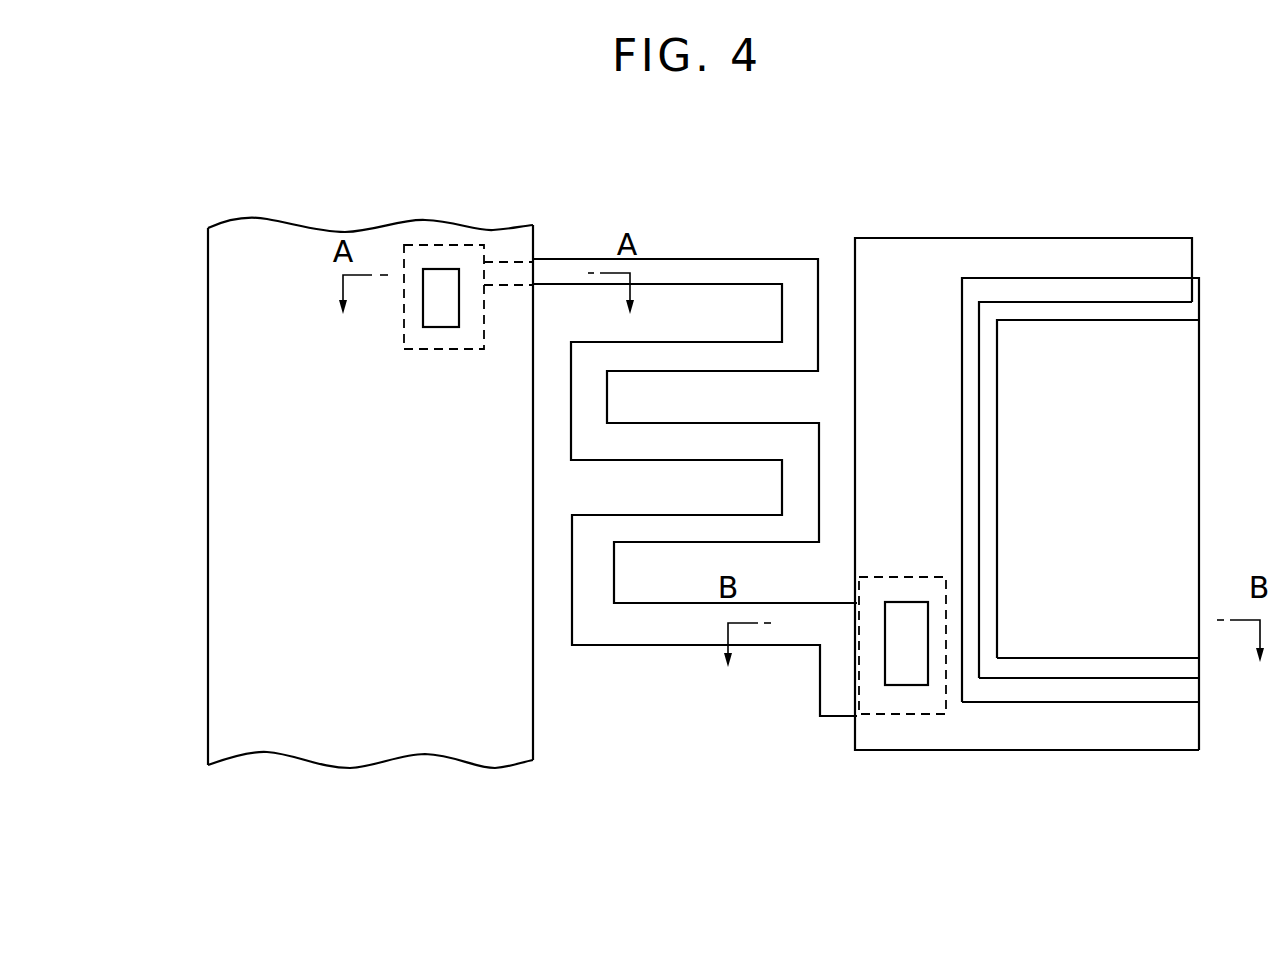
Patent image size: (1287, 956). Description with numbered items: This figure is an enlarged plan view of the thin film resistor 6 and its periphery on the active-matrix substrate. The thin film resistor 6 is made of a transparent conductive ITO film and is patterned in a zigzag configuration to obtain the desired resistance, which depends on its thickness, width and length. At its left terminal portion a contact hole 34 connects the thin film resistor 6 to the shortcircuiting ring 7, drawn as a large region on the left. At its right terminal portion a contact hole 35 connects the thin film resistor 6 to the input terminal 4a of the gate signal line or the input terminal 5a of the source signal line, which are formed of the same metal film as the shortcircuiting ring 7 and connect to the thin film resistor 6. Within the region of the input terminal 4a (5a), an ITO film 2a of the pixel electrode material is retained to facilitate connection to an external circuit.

The shortcircuiting ring 7 is at (290, 247).
The contact hole 34 is at (436, 275).
The thin film resistor 6 is at (710, 270).
The input terminal of the gate signal line 4a is at (1027, 456).
The input terminal of the source signal line 5a is at (945, 265).
The ITO film 2a is at (1167, 360).
The contact hole 35 is at (899, 682).